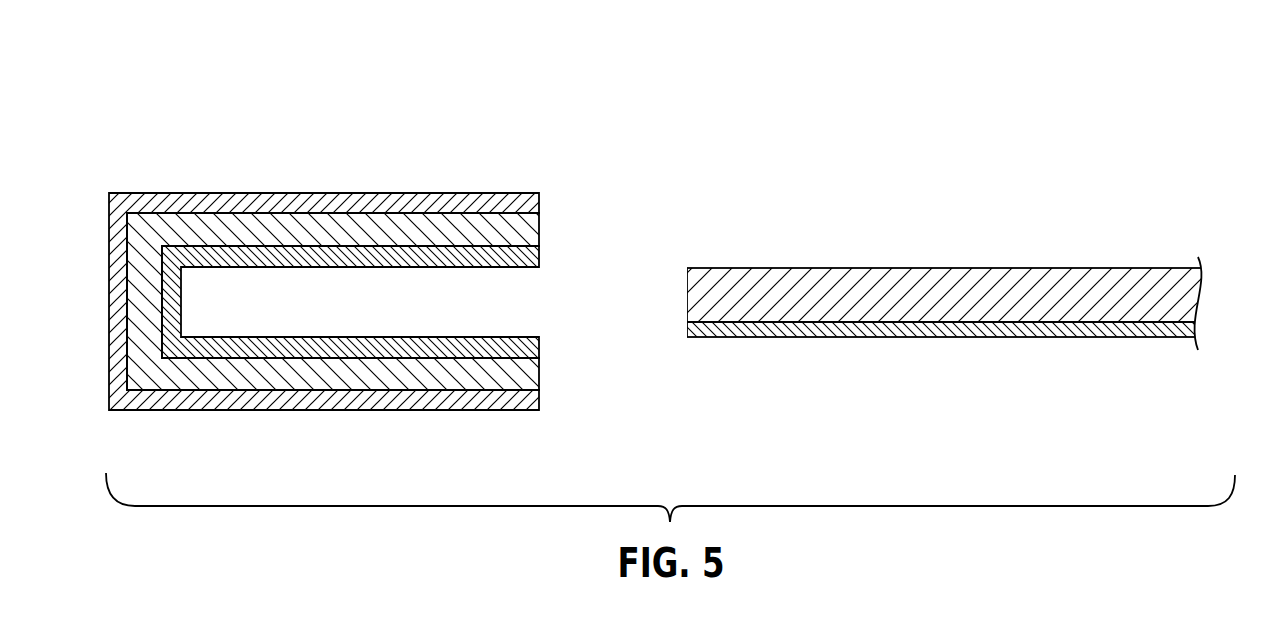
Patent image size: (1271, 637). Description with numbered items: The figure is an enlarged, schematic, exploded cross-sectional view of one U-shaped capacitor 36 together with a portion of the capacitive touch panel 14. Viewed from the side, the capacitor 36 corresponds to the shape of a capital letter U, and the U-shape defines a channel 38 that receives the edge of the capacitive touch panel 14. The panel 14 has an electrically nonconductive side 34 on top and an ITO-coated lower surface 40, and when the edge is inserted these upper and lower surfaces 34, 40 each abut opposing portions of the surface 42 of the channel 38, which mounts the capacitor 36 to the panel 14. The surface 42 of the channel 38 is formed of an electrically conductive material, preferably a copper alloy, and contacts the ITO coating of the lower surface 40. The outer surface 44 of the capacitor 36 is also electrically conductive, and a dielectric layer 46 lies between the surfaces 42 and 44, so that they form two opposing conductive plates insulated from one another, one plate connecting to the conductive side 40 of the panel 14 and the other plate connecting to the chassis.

The capacitive touch panel 14 is at (952, 340).
The electrically nonconductive side 34 is at (813, 268).
The U-shaped capacitor 36 is at (375, 236).
The channel 38 is at (562, 304).
The lower surface 40 is at (813, 337).
The surface of the channel 42 is at (510, 337).
The outer surface 44 is at (309, 128).
The dielectric layer 46 is at (540, 372).